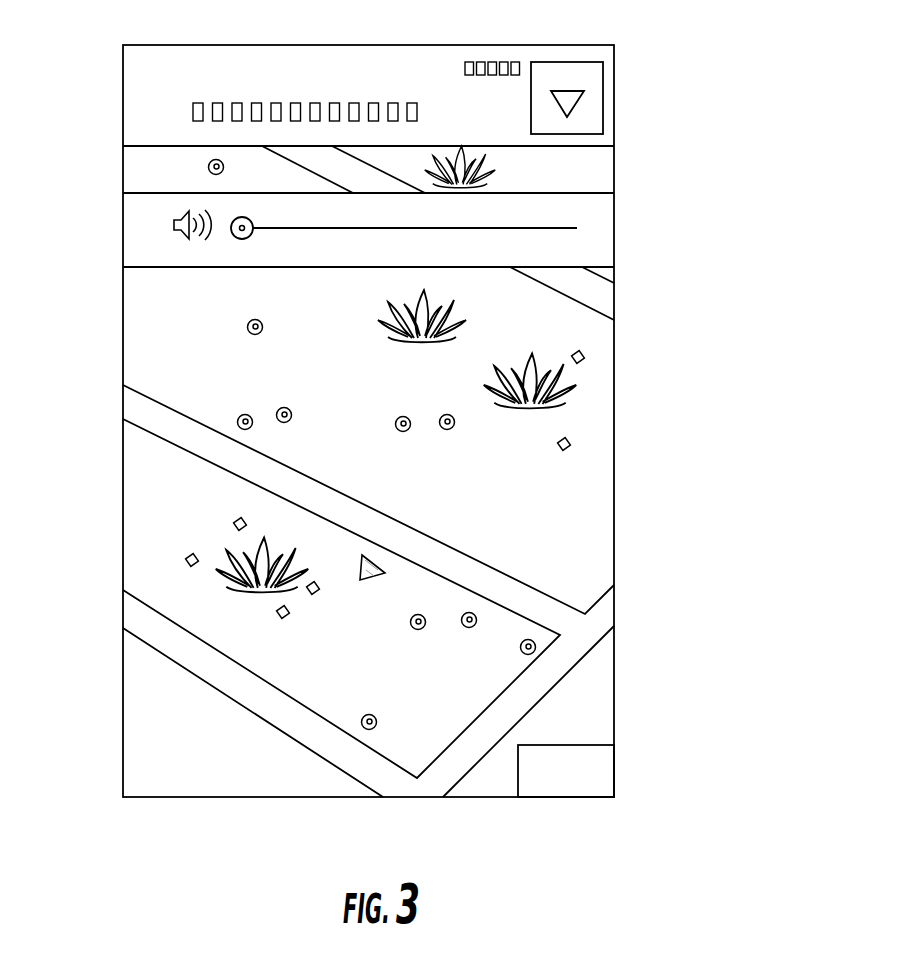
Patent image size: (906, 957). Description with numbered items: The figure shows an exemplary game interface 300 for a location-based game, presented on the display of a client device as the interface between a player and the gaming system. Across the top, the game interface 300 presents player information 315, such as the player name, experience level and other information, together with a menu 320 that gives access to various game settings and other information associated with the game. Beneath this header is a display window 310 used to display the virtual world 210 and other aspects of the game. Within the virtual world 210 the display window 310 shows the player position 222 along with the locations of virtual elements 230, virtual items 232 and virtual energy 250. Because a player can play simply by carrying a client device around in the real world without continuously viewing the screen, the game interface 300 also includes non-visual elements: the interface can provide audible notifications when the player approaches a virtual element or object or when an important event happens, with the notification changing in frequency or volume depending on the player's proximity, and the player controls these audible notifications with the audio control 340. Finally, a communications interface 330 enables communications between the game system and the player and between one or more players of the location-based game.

The game interface 300 is at (710, 130).
The player information 315 is at (134, 65).
The menu 320 is at (593, 98).
The display window 310 is at (603, 174).
The audio control 340 is at (134, 212).
The virtual world 210 is at (603, 505).
The virtual elements 230 is at (395, 318).
The virtual energy 250 is at (262, 330).
The virtual items 232 is at (235, 524).
The player position 222 is at (357, 577).
The communications interface 330 is at (608, 775).